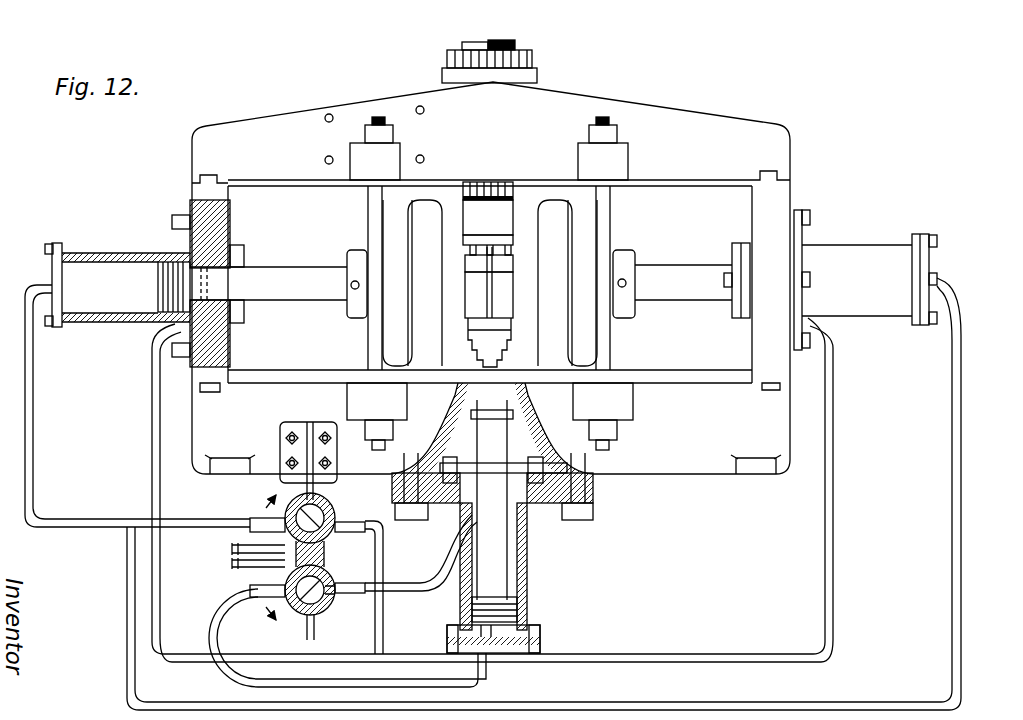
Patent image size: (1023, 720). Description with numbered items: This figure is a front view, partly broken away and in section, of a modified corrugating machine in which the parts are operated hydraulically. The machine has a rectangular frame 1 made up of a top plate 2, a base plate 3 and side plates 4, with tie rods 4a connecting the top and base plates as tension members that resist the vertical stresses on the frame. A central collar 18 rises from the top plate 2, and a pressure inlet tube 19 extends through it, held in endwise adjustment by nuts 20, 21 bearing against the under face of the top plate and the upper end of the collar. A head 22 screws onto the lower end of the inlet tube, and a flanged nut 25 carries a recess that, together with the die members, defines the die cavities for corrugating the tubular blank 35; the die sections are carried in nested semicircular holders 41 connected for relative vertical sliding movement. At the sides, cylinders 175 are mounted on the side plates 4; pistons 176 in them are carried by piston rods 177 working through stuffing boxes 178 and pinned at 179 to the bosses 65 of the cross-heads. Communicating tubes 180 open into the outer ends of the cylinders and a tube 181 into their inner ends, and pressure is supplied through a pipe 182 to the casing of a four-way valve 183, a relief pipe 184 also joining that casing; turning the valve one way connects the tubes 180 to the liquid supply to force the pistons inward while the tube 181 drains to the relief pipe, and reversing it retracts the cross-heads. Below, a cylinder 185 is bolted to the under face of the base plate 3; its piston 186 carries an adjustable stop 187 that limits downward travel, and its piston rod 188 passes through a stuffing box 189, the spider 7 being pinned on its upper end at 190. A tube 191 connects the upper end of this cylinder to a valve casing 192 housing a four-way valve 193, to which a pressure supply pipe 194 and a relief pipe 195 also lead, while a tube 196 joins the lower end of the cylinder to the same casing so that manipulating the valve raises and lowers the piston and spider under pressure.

The rectangular frame 1 is at (683, 106).
The top plate 2 is at (270, 127).
The base plate 3 is at (687, 393).
The side plates 4 is at (196, 192).
The tie rods 4a is at (597, 118).
The spider 7 is at (526, 403).
The collar 18 is at (446, 78).
The pressure inlet tube 19 is at (501, 40).
The nut 20 is at (483, 185).
The nut 21 is at (531, 56).
The head 22 is at (465, 216).
The flanged nut 25 is at (468, 246).
The blank 35 is at (489, 265).
The holders 41 is at (470, 285).
The boss 65 is at (350, 258).
The cylinders 175 is at (115, 253).
The pistons 176 is at (155, 324).
The piston rods 177 is at (292, 276).
The stuffing boxes 178 is at (233, 250).
The pin 179 is at (340, 302).
The communicating tubes 180 is at (34, 413).
The tube 181 is at (384, 620).
The pipe 182 is at (236, 549).
The four-way valve 183 is at (322, 543).
The relief pipe 184 is at (336, 491).
The cylinder 185 is at (523, 570).
The piston 186 is at (520, 598).
The adjustable stop 187 is at (516, 626).
The piston rod 188 is at (500, 540).
The stuffing box 189 is at (535, 465).
The pin 190 is at (474, 411).
The tube 191 is at (421, 590).
The valve casing 192 is at (323, 612).
The four-way valve 193 is at (327, 597).
The pressure supply pipe 194 is at (242, 568).
The relief pipe 195 is at (306, 636).
The tube 196 is at (222, 624).